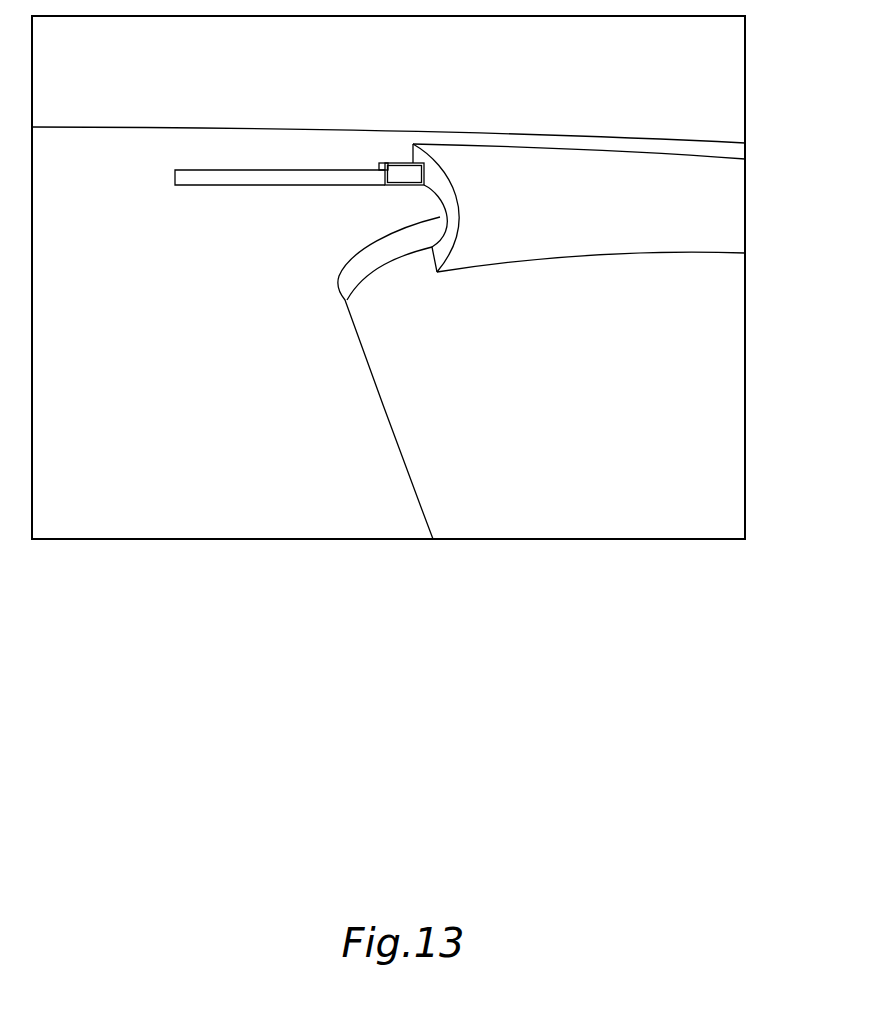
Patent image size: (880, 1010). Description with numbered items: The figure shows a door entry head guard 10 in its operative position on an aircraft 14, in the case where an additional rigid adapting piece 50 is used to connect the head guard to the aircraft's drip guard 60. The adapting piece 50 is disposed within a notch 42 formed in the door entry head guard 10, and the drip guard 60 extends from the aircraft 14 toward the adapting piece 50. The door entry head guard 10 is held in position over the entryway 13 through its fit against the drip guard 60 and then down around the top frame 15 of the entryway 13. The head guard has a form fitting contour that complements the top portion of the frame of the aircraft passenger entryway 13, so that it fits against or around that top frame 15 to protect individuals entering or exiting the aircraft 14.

The door entry head guard 10 is at (719, 192).
The entryway 13 is at (628, 338).
The aircraft 14 is at (290, 162).
The top frame 15 is at (445, 213).
The notch 42 is at (413, 162).
The adapting piece 50 is at (384, 162).
The drip guard 60 is at (307, 180).